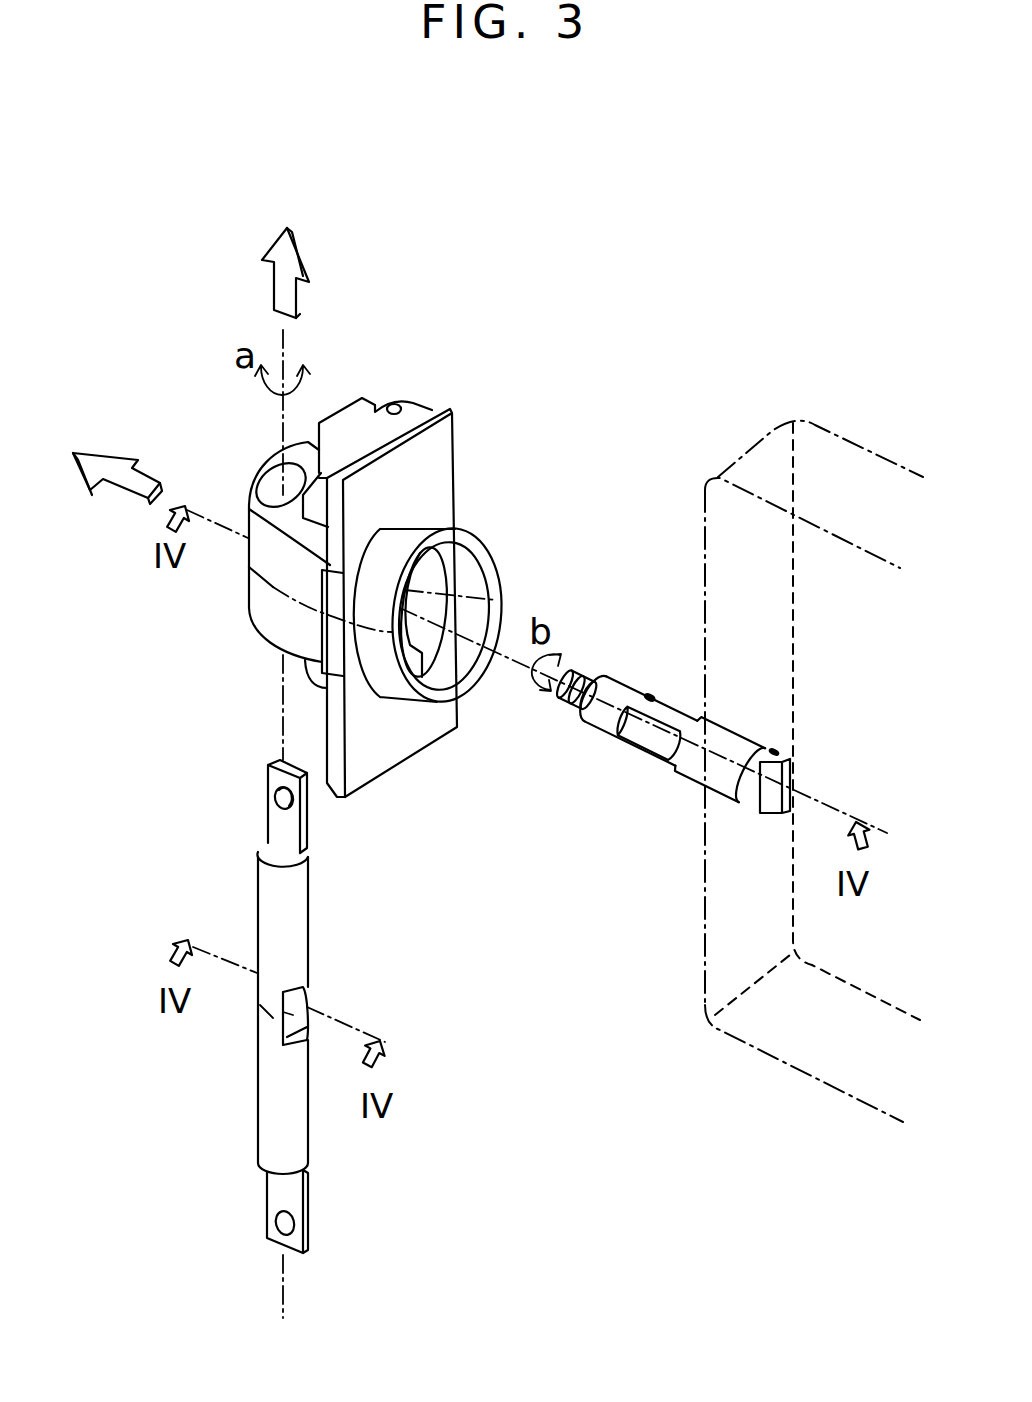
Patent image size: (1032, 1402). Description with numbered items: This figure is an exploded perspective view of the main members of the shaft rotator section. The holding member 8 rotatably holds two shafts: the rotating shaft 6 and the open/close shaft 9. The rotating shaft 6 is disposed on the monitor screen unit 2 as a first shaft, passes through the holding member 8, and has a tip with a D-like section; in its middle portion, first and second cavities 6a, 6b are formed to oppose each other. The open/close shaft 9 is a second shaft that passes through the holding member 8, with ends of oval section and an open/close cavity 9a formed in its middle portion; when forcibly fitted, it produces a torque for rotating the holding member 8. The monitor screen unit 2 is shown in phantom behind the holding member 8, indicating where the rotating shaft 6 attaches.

The monitor screen unit 2 is at (714, 542).
The rotating shaft 6 is at (693, 750).
The first cavity 6a is at (640, 745).
The second cavity 6b is at (680, 702).
The holding member 8 is at (447, 438).
The open/close shaft 9 is at (300, 890).
The open/close cavity 9a is at (303, 997).